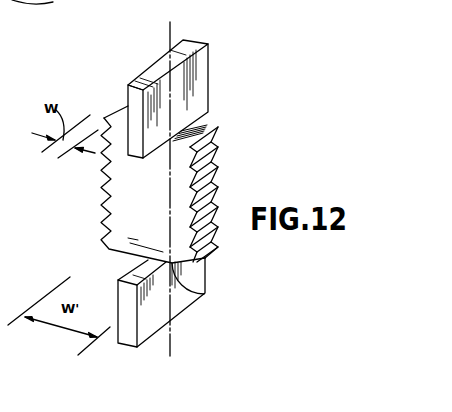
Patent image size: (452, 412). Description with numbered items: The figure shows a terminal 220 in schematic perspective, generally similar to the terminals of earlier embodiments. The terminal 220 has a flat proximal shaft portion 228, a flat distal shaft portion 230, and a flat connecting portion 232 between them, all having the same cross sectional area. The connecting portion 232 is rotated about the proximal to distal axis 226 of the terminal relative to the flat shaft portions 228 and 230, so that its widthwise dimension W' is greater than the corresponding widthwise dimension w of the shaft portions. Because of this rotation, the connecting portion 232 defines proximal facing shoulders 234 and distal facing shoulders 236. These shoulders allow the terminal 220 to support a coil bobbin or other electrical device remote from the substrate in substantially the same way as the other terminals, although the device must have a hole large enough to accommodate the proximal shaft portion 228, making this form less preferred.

The terminal 220 is at (212, 73).
The proximal to distal axis 226 is at (171, 36).
The proximal shaft portion 228 is at (202, 100).
The distal shaft portion 230 is at (207, 270).
The connecting portion 232 is at (218, 155).
The proximal facing shoulders 234 is at (212, 130).
The distal facing shoulders 236 is at (193, 290).